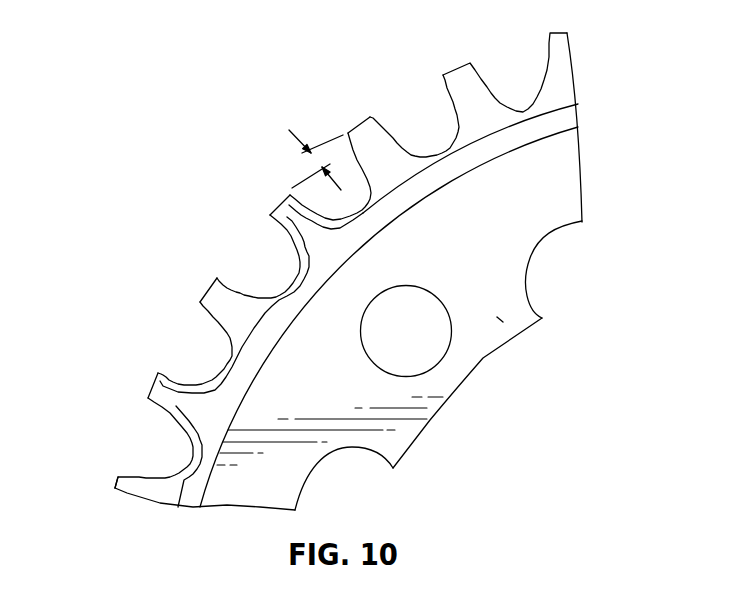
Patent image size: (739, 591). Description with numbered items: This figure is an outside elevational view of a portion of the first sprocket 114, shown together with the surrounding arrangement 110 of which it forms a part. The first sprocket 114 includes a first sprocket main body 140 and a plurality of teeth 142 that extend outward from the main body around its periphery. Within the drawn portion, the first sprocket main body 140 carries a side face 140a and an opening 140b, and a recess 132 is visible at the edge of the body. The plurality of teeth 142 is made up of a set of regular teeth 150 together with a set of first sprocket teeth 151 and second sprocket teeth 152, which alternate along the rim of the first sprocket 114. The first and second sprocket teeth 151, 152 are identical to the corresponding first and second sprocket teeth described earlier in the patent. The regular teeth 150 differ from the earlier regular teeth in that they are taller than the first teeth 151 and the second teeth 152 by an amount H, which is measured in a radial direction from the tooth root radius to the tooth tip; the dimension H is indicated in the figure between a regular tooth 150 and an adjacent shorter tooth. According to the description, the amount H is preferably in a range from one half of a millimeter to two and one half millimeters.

The sprocket 110 is at (213, 118).
The first sprocket 114 is at (507, 97).
The recess 132 is at (485, 268).
The first sprocket main body 140 is at (527, 190).
The first side surface 140a is at (497, 317).
The through hole 140b is at (448, 327).
The teeth 142 is at (208, 282).
The regular teeth 150 is at (443, 73).
The first sprocket teeth 151 is at (281, 206).
The second sprocket teeth 152 is at (137, 357).
The amount H is at (313, 162).